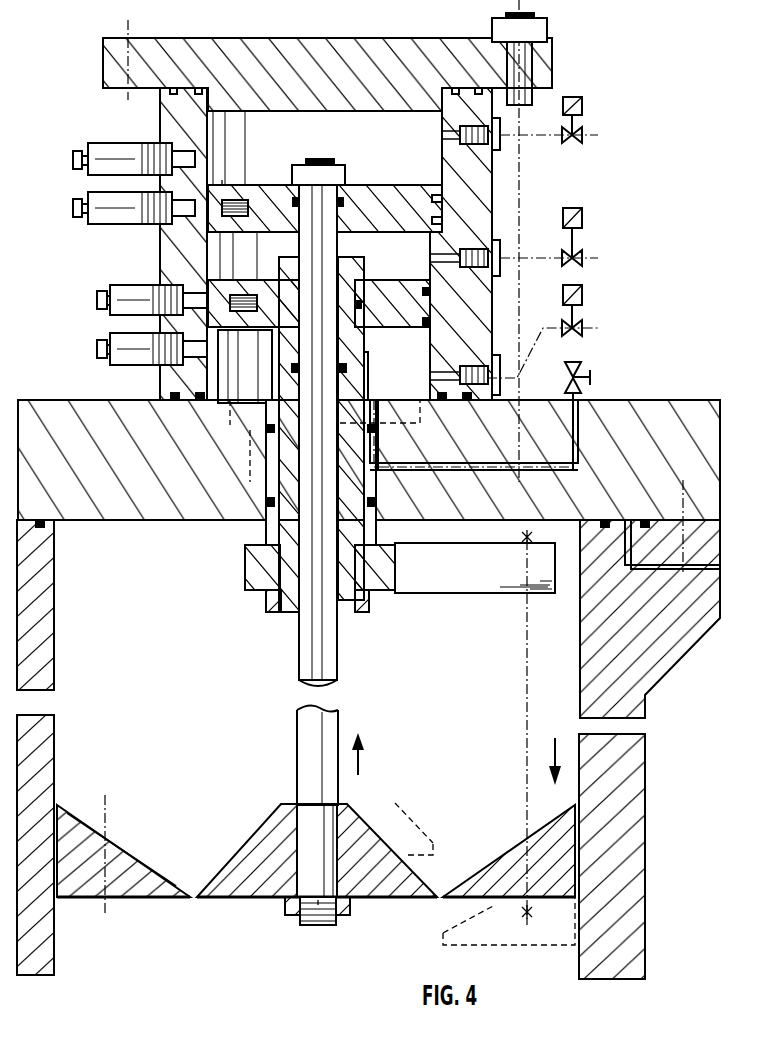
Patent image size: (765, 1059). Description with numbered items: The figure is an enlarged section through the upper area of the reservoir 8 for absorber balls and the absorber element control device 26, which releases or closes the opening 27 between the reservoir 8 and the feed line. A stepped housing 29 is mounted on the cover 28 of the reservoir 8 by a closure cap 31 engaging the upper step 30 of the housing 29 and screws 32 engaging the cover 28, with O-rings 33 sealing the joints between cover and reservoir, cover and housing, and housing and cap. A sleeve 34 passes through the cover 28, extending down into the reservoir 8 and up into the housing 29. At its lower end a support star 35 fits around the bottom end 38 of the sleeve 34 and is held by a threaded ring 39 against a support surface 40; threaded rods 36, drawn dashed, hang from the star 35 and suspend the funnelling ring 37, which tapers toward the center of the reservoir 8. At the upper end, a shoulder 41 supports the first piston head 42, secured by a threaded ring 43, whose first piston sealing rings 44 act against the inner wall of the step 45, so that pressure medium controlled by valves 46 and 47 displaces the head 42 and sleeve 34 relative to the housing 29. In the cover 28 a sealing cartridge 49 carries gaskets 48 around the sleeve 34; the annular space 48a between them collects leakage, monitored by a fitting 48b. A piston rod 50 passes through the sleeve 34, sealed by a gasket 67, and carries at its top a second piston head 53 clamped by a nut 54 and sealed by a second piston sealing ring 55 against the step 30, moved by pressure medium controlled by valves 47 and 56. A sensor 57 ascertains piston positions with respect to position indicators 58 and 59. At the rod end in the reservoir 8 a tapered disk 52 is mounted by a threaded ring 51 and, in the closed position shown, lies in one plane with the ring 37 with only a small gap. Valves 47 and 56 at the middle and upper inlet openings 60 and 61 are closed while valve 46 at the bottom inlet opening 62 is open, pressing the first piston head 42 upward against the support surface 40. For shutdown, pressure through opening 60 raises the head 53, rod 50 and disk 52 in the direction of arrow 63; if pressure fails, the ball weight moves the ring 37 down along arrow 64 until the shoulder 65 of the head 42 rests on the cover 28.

The reservoir 8 is at (42, 943).
The absorber element control device 26 is at (197, 903).
The opening 27 is at (326, 964).
The cover 28 is at (58, 432).
The stepped housing 29 is at (98, 246).
The upper step 30 is at (228, 178).
The closure cap 31 is at (247, 56).
The screws 32 is at (130, 26).
The O-rings 33 is at (168, 395).
The sleeve 34 is at (279, 390).
The support star 35 is at (385, 584).
The threaded rods 36 is at (525, 644).
The funnelling ring 37 is at (490, 876).
The bottom end 38 is at (362, 612).
The threaded ring 39 is at (268, 601).
The support surface 40 is at (260, 548).
The shoulder 41 is at (350, 350).
The first piston head 42 is at (382, 300).
The threaded ring 43 is at (222, 262).
The first piston sealing rings 44 is at (216, 320).
The step 45 is at (192, 246).
The valve 46 is at (585, 318).
The valve 47 is at (585, 255).
The gaskets 48 is at (275, 428).
The annular space 48a is at (380, 440).
The fitting 48b is at (580, 365).
The sealing cartridge 49 is at (243, 517).
The piston rod 50 is at (306, 638).
The threaded ring 51 is at (346, 905).
The disk 52 is at (256, 882).
The second piston head 53 is at (388, 210).
The nut 54 is at (325, 180).
The second piston sealing ring 55 is at (222, 183).
The valve 56 is at (585, 131).
The sensor 57 is at (248, 200).
The position indicator 58 is at (126, 290).
The position indicator 59 is at (108, 149).
The middle inlet opening 60 is at (455, 258).
The upper inlet opening 61 is at (452, 135).
The bottom inlet opening 62 is at (455, 376).
The arrow 63 is at (360, 762).
The arrow 64 is at (555, 757).
The shoulder 65 is at (258, 342).
The gasket 67 is at (299, 368).